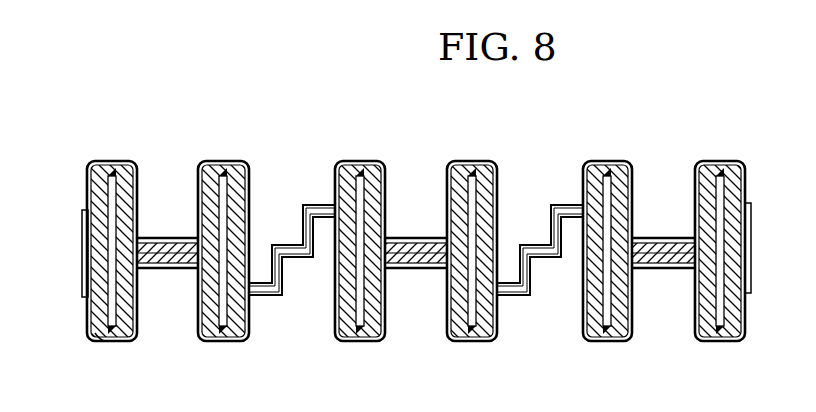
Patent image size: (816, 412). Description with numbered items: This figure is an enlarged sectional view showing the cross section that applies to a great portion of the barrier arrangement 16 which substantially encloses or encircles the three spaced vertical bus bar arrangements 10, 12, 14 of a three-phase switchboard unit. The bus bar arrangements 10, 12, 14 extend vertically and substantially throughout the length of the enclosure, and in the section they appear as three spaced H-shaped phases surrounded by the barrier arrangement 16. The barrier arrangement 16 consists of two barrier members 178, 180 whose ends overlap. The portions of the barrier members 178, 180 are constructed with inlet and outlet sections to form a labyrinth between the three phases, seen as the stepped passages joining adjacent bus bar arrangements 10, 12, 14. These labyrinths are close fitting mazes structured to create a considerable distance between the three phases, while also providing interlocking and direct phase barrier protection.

The bus bar arrangement 10 is at (617, 161).
The bus bar arrangement 12 is at (371, 162).
The bus bar arrangement 14 is at (123, 162).
The barrier arrangement 16 is at (738, 161).
The barrier member 178 is at (86, 210).
The barrier member 180 is at (97, 341).